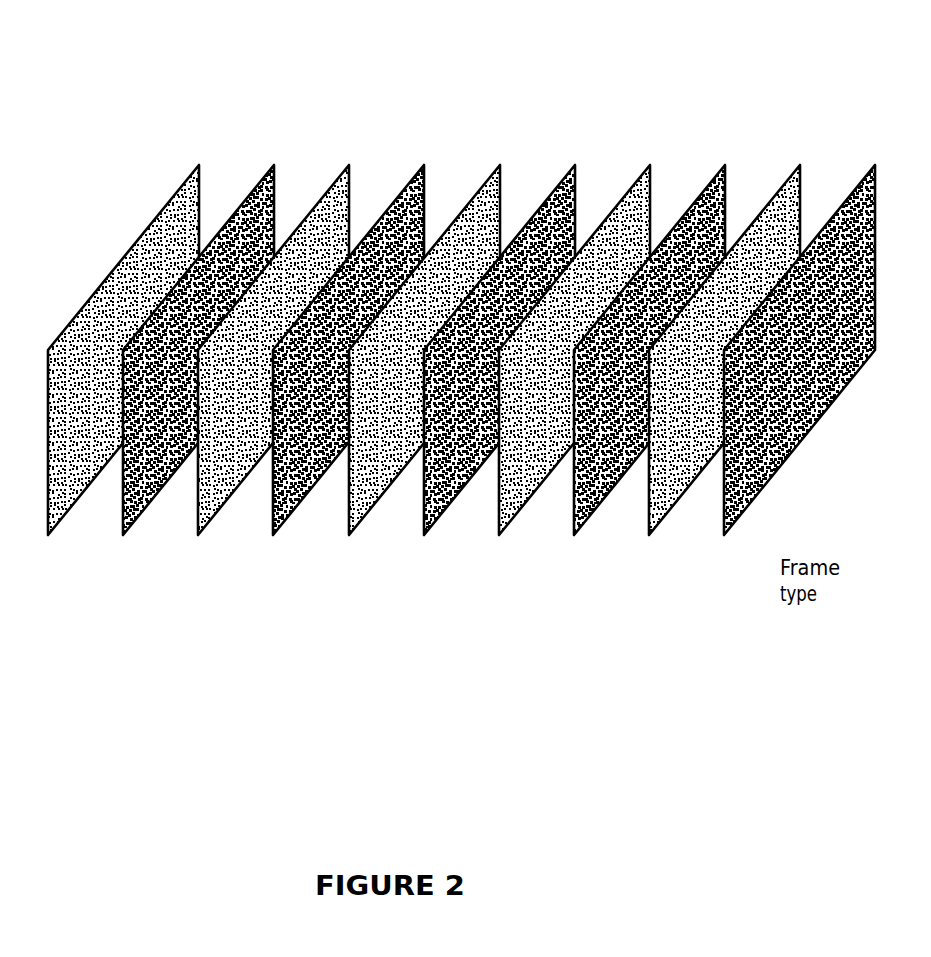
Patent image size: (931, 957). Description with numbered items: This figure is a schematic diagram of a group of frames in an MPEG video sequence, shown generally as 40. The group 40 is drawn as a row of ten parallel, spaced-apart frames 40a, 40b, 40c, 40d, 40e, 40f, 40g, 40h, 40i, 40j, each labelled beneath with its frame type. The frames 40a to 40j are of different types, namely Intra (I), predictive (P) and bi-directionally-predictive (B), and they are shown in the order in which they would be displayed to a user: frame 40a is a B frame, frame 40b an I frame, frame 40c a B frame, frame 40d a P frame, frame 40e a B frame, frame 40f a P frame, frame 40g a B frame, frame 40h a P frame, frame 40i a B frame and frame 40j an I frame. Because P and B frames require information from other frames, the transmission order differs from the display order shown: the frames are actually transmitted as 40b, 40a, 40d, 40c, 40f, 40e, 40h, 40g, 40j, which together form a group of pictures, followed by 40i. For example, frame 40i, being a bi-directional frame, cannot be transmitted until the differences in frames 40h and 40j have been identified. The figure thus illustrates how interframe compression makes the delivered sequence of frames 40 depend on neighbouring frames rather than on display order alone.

The group of frames 40 is at (670, 112).
The frame 40a is at (57, 668).
The frame 40b is at (120, 668).
The frame 40c is at (201, 668).
The frame 40d is at (282, 668).
The frame 40e is at (347, 668).
The frame 40f is at (427, 668).
The frame 40g is at (491, 668).
The frame 40h is at (571, 668).
The frame 40i is at (650, 668).
The frame 40j is at (730, 668).